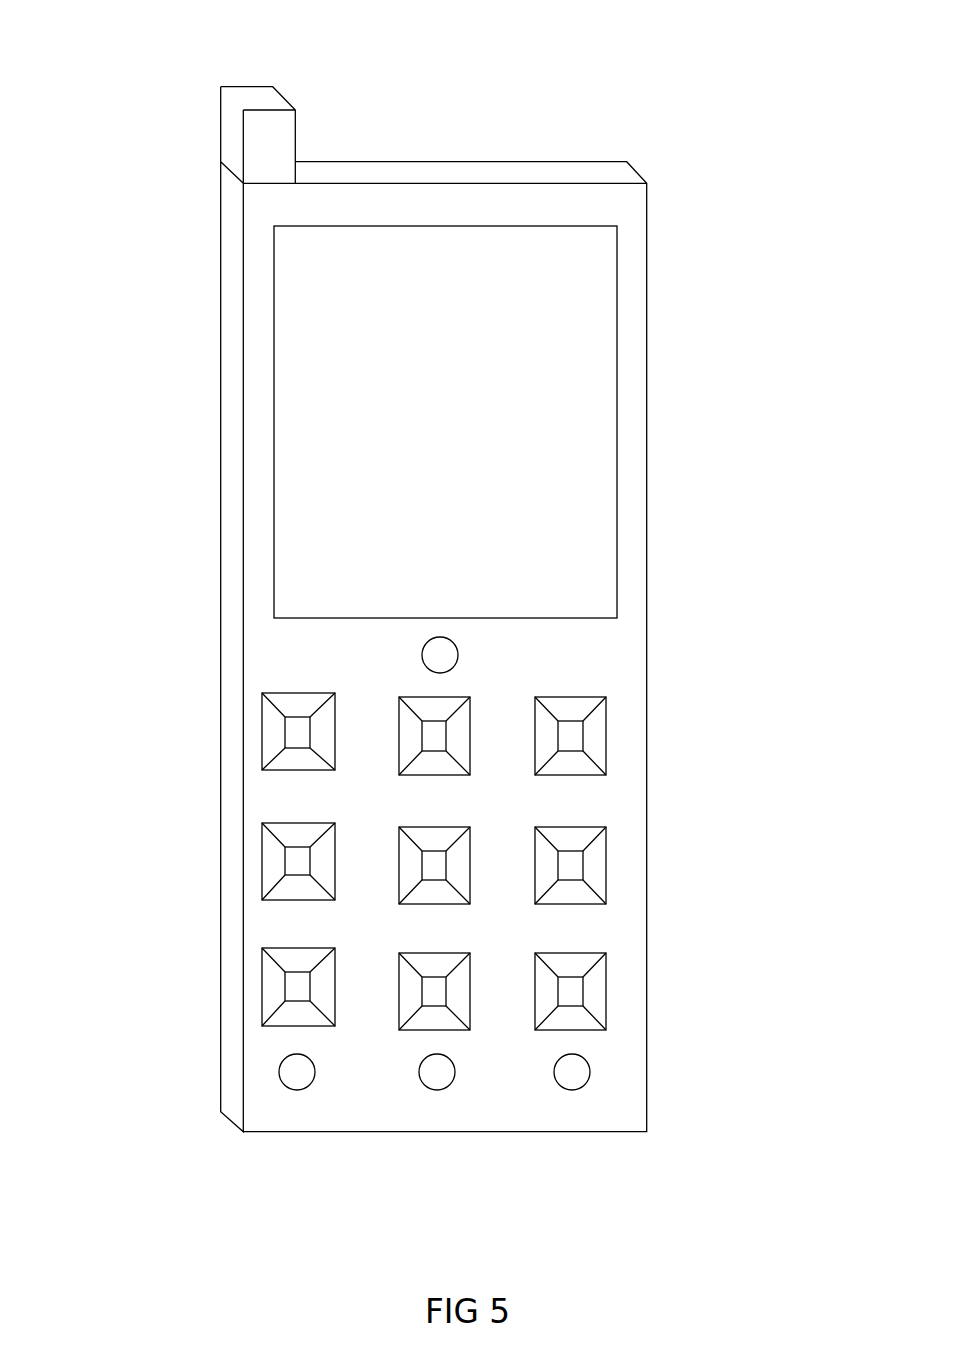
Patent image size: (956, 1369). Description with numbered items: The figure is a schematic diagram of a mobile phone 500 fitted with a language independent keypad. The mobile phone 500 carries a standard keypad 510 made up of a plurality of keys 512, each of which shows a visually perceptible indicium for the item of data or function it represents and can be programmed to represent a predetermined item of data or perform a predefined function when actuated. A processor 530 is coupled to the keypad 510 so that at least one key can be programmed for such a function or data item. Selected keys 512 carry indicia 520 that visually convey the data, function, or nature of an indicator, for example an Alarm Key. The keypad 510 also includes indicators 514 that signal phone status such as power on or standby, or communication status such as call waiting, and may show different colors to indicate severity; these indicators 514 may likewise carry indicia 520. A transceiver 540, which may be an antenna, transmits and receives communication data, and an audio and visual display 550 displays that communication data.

The mobile phone 500 is at (637, 145).
The keypad 510 is at (347, 947).
The keys 512 is at (262, 963).
The indicators 514 is at (293, 1078).
The indicia 520 is at (273, 730).
The processor 530 is at (457, 668).
The transceiver 540 is at (220, 108).
The audio and visual display 550 is at (600, 352).